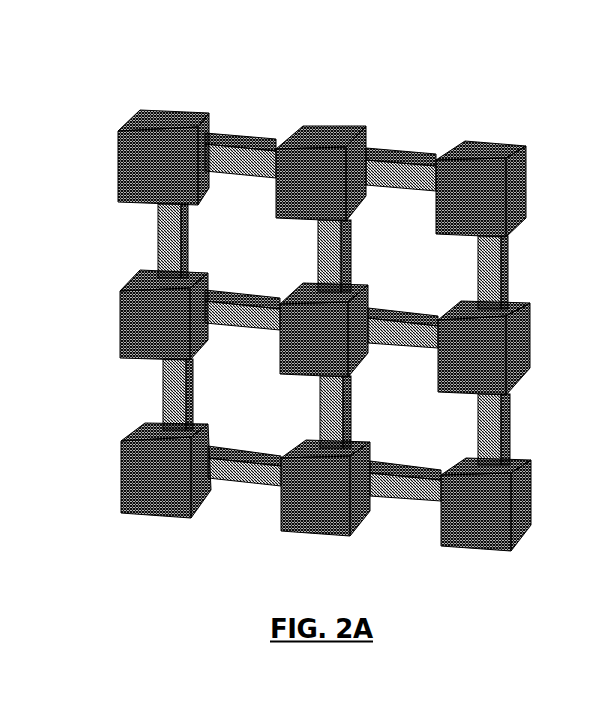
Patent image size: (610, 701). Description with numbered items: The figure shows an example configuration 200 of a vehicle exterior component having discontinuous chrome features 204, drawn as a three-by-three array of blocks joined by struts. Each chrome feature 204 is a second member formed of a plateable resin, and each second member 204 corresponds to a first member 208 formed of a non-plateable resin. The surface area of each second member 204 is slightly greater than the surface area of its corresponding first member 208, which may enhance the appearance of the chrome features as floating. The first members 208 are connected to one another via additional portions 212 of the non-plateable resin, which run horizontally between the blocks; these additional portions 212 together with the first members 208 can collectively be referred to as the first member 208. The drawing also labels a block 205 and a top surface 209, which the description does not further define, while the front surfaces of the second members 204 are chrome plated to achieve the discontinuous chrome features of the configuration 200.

The example configuration 200 is at (183, 49).
The chrome feature 204 is at (106, 315).
The cube element 205 is at (308, 143).
The first member 208 is at (522, 151).
The top surface of cube element 209 is at (478, 152).
The additional portion 212 is at (242, 127).